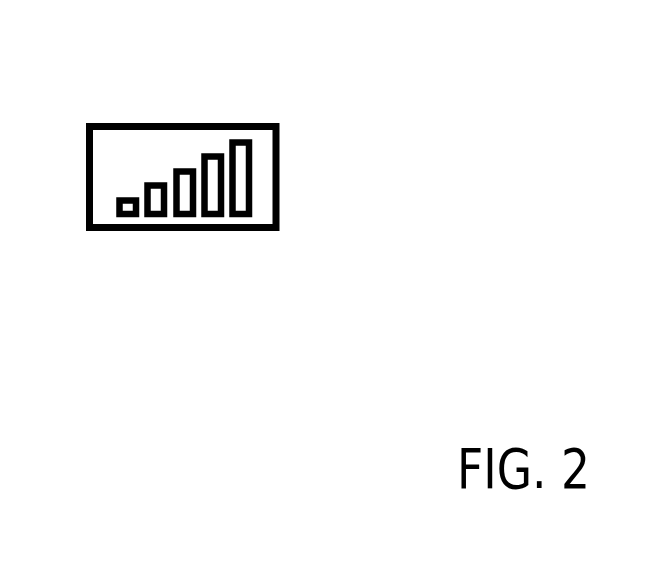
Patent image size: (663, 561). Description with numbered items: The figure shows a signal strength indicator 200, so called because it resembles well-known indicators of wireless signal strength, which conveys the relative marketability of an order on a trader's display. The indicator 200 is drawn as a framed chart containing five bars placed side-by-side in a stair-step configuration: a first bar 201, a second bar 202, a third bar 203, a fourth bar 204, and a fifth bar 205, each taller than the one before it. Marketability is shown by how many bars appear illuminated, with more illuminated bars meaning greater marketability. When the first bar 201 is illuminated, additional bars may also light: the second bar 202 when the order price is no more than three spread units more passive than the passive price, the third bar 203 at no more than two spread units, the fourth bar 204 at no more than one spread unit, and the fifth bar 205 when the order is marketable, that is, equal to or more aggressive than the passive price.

The signal strength indicator 200 is at (331, 193).
The first bar 201 is at (117, 238).
The second bar 202 is at (152, 240).
The third bar 203 is at (182, 242).
The fourth bar 204 is at (213, 238).
The fifth bar 205 is at (243, 237).